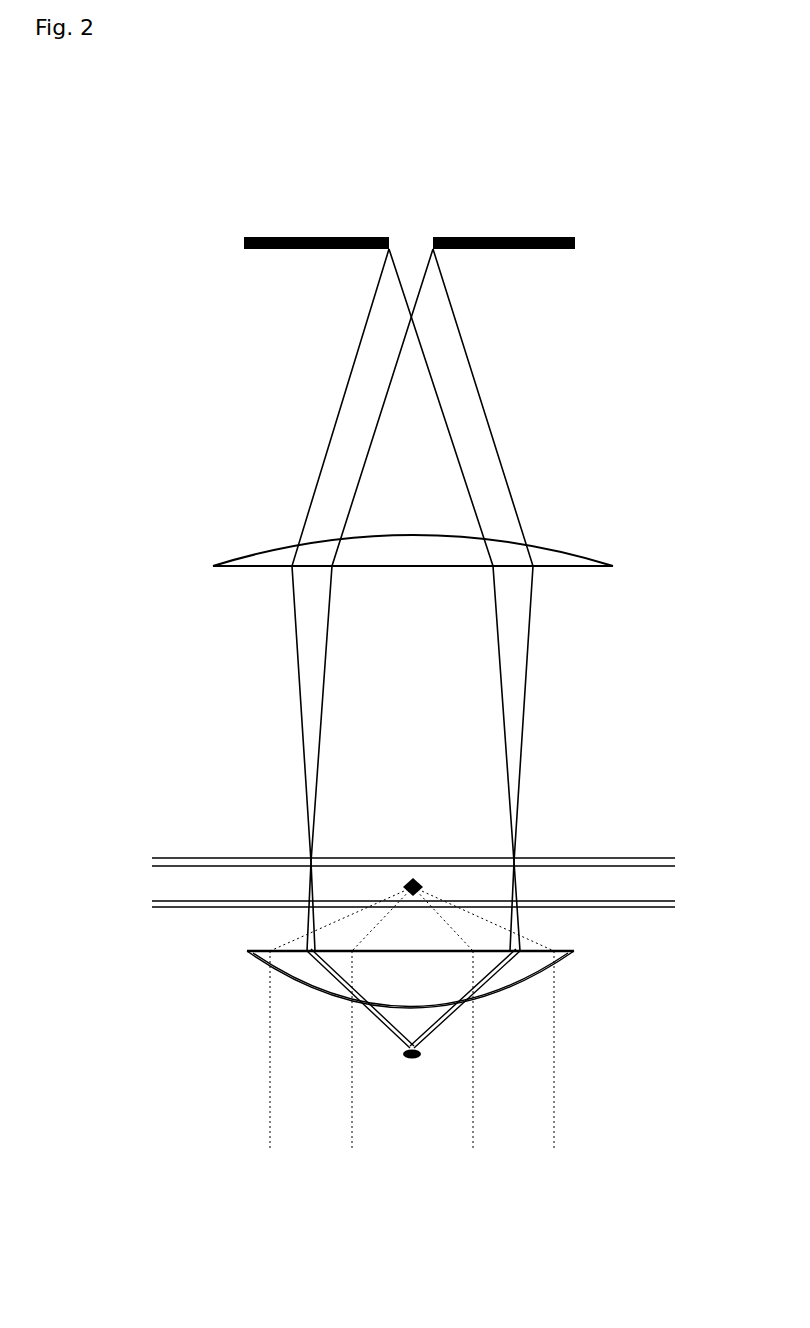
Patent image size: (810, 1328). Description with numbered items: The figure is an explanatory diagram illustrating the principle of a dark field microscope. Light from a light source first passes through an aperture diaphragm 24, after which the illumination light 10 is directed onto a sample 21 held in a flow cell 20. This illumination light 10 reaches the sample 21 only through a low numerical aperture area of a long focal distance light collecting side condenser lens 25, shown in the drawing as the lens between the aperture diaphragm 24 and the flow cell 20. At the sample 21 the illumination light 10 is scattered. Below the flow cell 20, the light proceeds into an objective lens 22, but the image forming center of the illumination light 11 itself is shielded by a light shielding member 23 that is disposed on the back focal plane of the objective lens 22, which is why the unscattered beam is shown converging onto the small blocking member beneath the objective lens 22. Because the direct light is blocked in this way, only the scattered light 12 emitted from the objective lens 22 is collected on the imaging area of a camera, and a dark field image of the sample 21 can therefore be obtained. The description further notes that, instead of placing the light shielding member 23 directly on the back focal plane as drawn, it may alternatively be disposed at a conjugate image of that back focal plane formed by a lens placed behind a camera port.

The aperture diaphragm 24 is at (530, 237).
The long focal distance light collecting side condenser lens 25 is at (573, 563).
The illumination light 10 is at (517, 682).
The flow cell 20 is at (655, 882).
The sample 21 is at (415, 878).
The image forming center of the illumination light 11 is at (497, 980).
The objective lens 22 is at (295, 963).
The scattered light 12 is at (538, 943).
The light shielding member 23 is at (413, 1060).